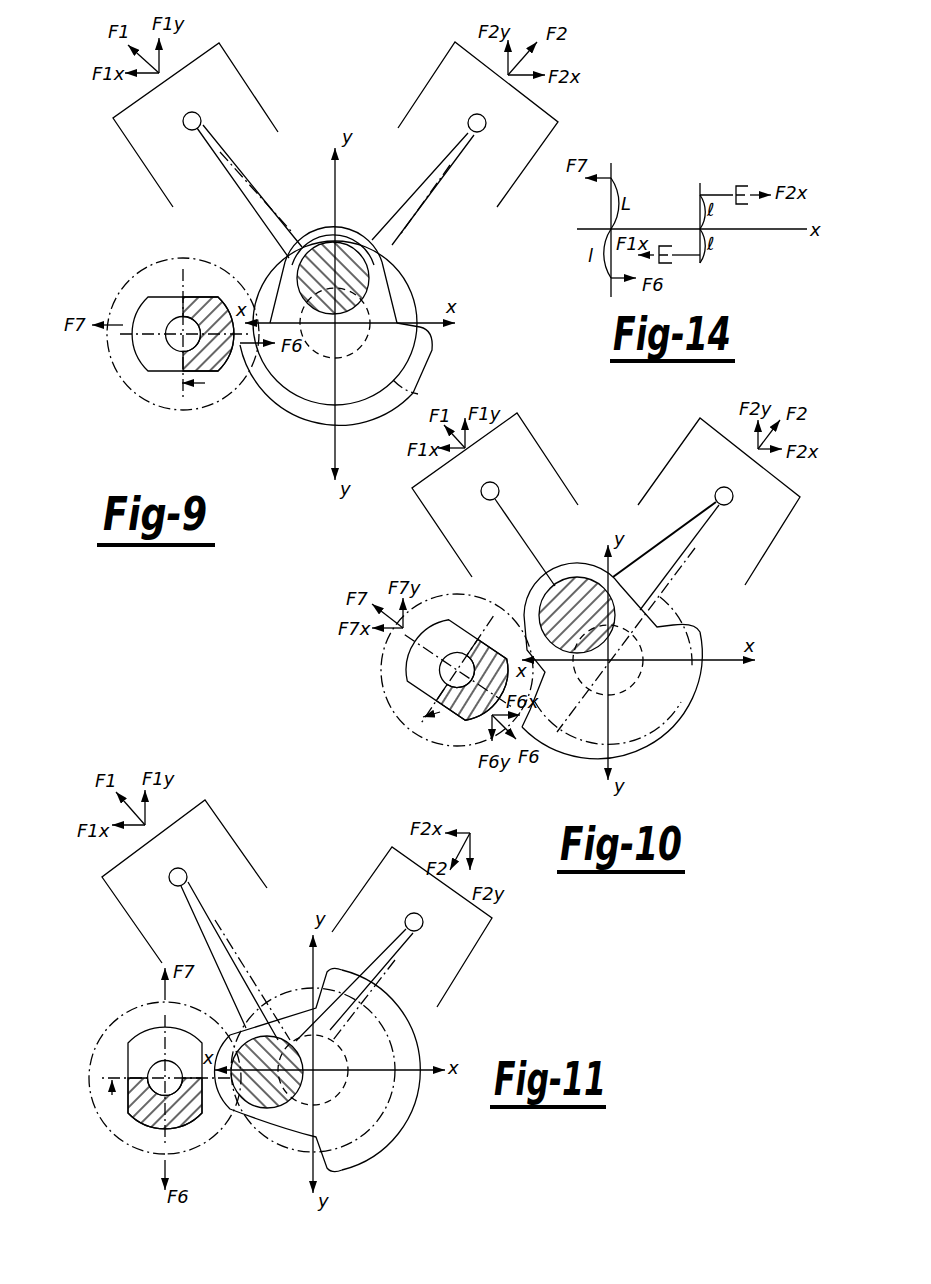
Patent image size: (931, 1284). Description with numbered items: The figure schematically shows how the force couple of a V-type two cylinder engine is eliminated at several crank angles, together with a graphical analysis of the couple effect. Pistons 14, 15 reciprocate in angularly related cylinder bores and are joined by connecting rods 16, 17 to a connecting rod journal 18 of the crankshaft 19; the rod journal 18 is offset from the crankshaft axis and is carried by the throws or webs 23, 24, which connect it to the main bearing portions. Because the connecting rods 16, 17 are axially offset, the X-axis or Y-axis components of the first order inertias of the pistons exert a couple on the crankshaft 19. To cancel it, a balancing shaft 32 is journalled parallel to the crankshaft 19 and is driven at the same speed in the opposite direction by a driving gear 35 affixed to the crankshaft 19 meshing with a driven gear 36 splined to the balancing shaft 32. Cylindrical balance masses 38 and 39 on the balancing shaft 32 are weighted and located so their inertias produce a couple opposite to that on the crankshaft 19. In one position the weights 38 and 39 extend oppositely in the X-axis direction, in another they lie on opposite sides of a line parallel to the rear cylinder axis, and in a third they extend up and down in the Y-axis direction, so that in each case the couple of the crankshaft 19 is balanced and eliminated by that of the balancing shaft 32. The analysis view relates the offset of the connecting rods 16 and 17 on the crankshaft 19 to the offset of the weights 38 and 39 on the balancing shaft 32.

In FIG. 9, the piston 14 is at (250, 83).
In FIG. 10, the piston 14 is at (530, 434).
In FIG. 11, the piston 14 is at (233, 835).
In FIG. 9, the piston 15 is at (420, 87).
In FIG. 10, the piston 15 is at (770, 545).
In FIG. 11, the piston 15 is at (367, 880).
In FIG. 9, the connecting rod 16 is at (248, 180).
In FIG. 10, the connecting rod 16 is at (517, 523).
In FIG. 11, the connecting rod 16 is at (218, 960).
In FIG. 9, the connecting rod 17 is at (432, 170).
In FIG. 10, the connecting rod 17 is at (683, 527).
In FIG. 11, the connecting rod 17 is at (388, 948).
In FIG. 9, the connecting rod journal 18 is at (346, 240).
In FIG. 10, the connecting rod journal 18 is at (580, 577).
In FIG. 11, the connecting rod journal 18 is at (258, 1104).
In FIG. 9, the crankshaft 19 is at (360, 352).
In FIG. 10, the crankshaft 19 is at (636, 688).
In FIG. 11, the crankshaft 19 is at (346, 1098).
In FIG. 9, the throw or web 23 is at (377, 275).
In FIG. 10, the throw or web 23 is at (634, 642).
In FIG. 11, the throw or web 23 is at (278, 1062).
In FIG. 9, the throw or web 24 is at (390, 267).
In FIG. 10, the throw or web 24 is at (638, 597).
In FIG. 11, the throw or web 24 is at (297, 1005).
In FIG. 9, the balancing shaft 32 is at (193, 293).
In FIG. 10, the balancing shaft 32 is at (470, 628).
In FIG. 11, the balancing shaft 32 is at (125, 1062).
In FIG. 9, the driving gear 35 is at (428, 389).
In FIG. 10, the driving gear 35 is at (674, 706).
In FIG. 11, the driving gear 35 is at (393, 1040).
In FIG. 9, the driven gear 36 is at (137, 385).
In FIG. 10, the driven gear 36 is at (433, 612).
In FIG. 11, the driven gear 36 is at (137, 1004).
In FIG. 9, the balance mass 38 is at (219, 366).
In FIG. 10, the balance mass 38 is at (447, 732).
In FIG. 11, the balance mass 38 is at (140, 1116).
In FIG. 9, the balance mass 39 is at (148, 310).
In FIG. 10, the balance mass 39 is at (408, 718).
In FIG. 11, the balance mass 39 is at (140, 1044).